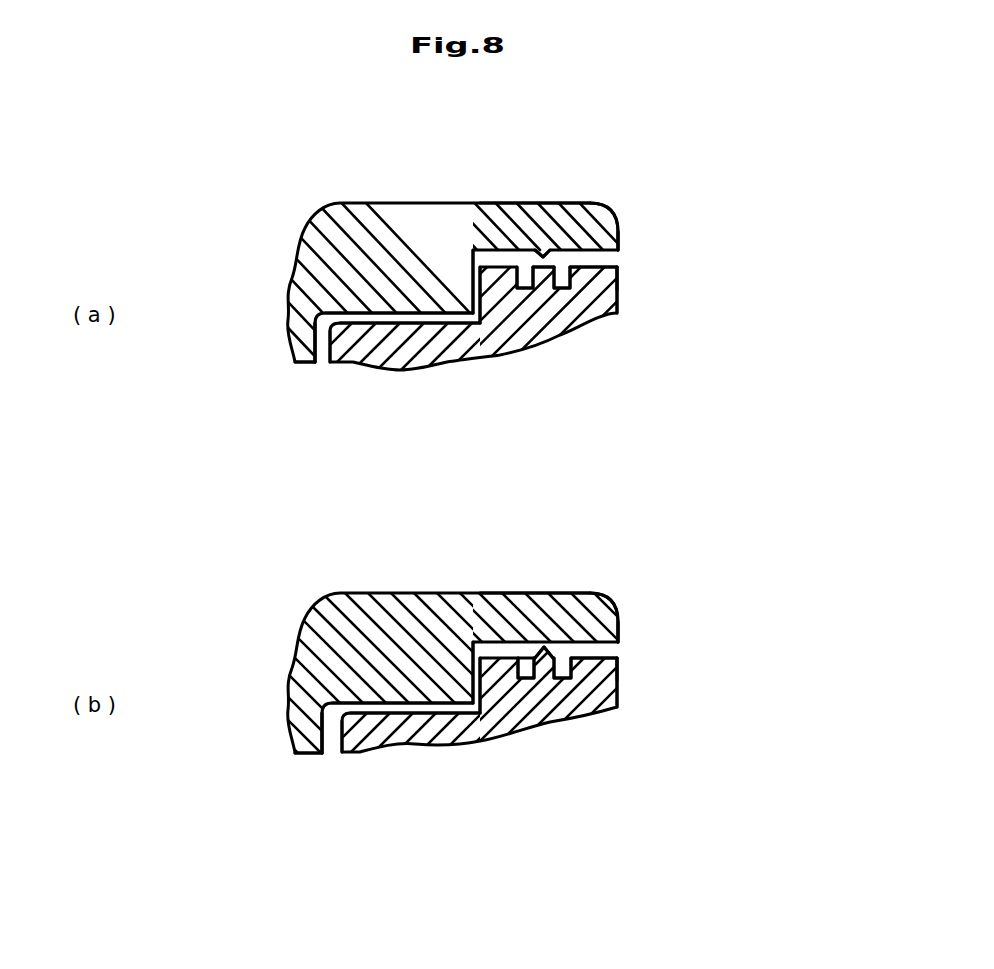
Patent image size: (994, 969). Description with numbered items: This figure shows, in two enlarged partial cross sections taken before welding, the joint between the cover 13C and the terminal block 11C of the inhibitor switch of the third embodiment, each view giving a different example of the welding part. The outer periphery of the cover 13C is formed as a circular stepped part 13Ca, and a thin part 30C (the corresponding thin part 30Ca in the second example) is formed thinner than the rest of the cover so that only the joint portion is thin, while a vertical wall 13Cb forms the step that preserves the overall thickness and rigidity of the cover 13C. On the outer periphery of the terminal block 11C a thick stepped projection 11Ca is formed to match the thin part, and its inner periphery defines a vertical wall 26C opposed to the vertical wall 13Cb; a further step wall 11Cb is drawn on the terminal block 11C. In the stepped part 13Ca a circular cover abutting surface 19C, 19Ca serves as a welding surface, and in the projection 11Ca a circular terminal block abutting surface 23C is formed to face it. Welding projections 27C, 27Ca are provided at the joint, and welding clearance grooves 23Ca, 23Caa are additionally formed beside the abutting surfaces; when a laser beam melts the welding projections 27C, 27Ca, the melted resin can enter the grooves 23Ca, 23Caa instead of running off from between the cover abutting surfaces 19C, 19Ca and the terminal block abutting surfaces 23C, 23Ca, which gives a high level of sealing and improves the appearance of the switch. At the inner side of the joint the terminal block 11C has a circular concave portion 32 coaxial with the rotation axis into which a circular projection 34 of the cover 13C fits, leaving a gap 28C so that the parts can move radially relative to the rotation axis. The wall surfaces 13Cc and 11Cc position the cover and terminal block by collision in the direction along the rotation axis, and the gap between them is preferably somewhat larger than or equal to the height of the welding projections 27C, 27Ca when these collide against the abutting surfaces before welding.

The cover 13C is at (357, 203).
The wall surface 13Cc is at (400, 305).
The vertical wall 13Cb is at (470, 290).
The stepped part 13Ca is at (590, 220).
The welding projection 27C is at (528, 248).
The welding projection 27Ca is at (549, 650).
The thin part 30C is at (558, 207).
The top wall portion 30Ca is at (546, 610).
The cover abutting surface 19C is at (618, 256).
The cover abutting surface 19Ca is at (614, 645).
The terminal block abutting surface 23C is at (612, 261).
The welding clearance groove 23Ca is at (558, 292).
The welding clearance groove 23Caa is at (560, 680).
The circular concave portion 32 is at (326, 338).
The circular projection 34 is at (307, 342).
The gap 28C is at (322, 365).
The terminal block 11C is at (357, 357).
The wall surface 11Cc is at (407, 338).
The step wall of lower member 11Cb is at (475, 300).
The projection 11Ca is at (600, 310).
The vertical wall 26C is at (524, 297).